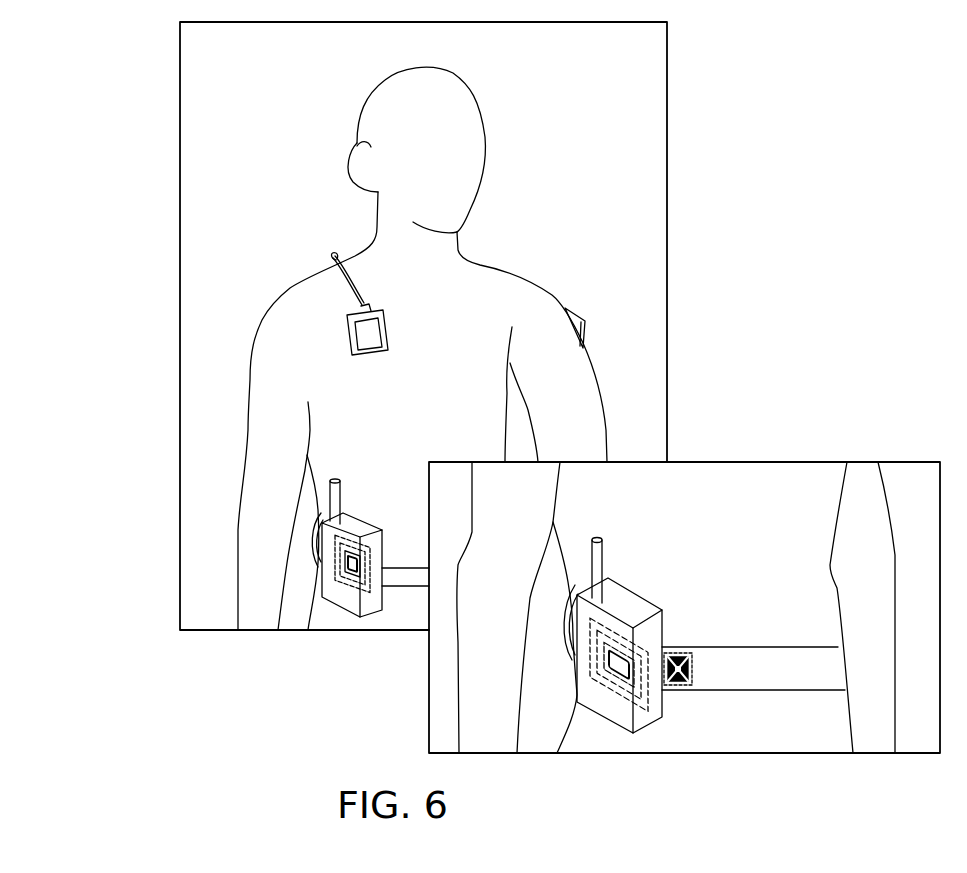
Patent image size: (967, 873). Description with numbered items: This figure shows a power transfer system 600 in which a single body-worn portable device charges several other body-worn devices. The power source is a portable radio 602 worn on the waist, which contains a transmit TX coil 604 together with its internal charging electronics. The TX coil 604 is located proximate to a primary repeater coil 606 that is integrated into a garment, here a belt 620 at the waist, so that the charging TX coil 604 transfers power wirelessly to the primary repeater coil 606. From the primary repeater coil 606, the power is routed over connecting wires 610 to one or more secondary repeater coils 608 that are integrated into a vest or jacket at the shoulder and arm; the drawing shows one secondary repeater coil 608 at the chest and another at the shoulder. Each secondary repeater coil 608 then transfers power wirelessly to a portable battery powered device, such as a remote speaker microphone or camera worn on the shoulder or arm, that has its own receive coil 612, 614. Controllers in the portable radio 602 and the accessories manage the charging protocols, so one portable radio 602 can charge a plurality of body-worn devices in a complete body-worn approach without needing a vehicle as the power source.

The wireless power transfer system 600 is at (133, 697).
The portable radio 602 is at (362, 530).
The TX coil 604 is at (350, 587).
The primary repeater coil 606 is at (692, 668).
The secondary repeater coil 608 is at (472, 332).
The connecting wires 610 is at (322, 520).
The receive coil 612 is at (588, 318).
The receive coil 614 is at (378, 357).
The belt 620 is at (790, 650).